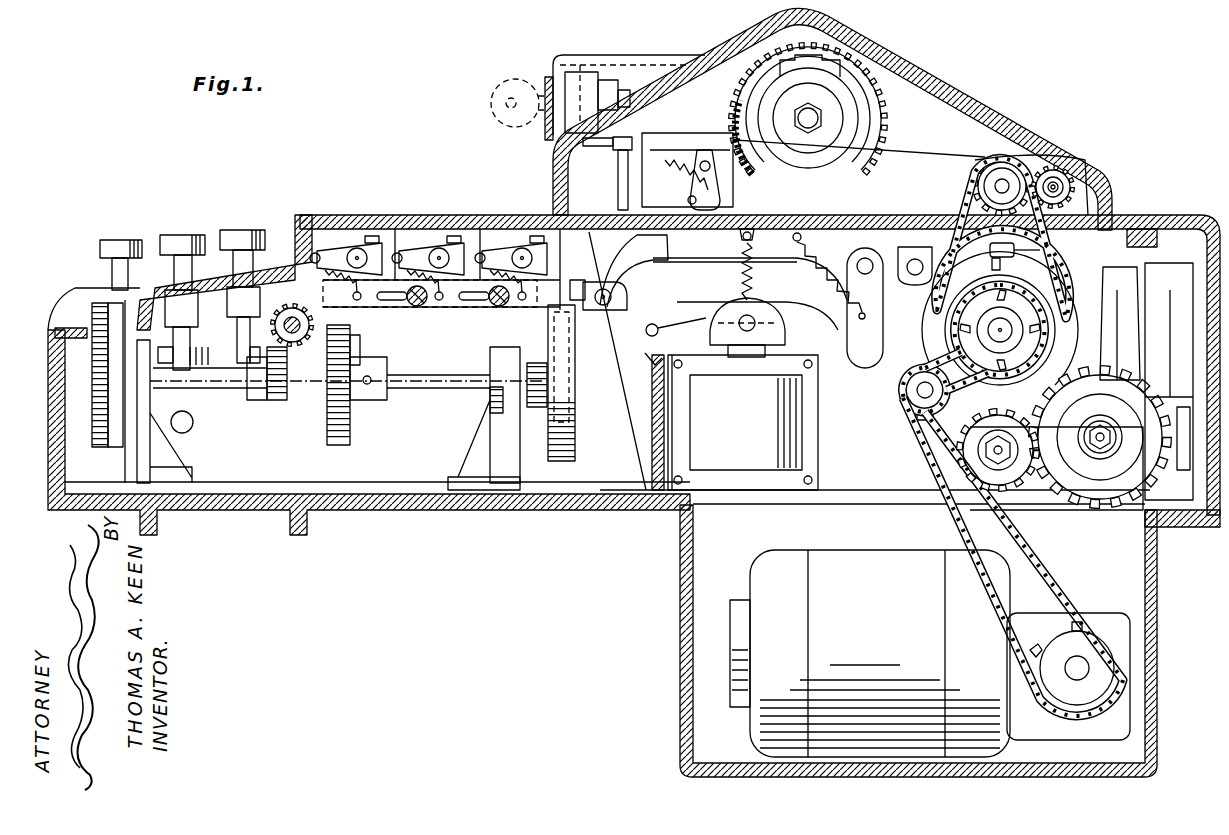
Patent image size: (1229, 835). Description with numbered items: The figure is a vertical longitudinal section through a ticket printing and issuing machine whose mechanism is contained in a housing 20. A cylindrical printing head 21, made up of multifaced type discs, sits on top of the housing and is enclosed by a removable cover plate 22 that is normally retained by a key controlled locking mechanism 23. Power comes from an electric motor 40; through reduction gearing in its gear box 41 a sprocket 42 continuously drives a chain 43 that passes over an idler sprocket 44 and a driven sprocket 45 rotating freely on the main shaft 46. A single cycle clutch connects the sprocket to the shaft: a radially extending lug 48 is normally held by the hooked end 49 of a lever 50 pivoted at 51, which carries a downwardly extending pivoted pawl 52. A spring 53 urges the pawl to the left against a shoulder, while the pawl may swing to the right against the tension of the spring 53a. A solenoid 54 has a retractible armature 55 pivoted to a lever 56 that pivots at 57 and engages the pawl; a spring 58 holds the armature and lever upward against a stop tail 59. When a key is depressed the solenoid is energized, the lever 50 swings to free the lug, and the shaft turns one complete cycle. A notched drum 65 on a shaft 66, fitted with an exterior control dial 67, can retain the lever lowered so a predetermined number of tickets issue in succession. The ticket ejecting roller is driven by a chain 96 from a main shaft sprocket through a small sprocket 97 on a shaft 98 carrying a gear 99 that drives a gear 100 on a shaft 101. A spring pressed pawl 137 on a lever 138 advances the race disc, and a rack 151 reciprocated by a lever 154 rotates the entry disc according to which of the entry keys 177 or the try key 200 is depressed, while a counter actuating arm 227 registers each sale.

The housing 20 is at (540, 508).
The printing head 21 is at (895, 104).
The cover plate 22 is at (1020, 112).
The key controlled locking mechanism 23 is at (545, 132).
The electric motor 40 is at (893, 628).
The gear box 41 is at (1116, 625).
The sprocket 42 is at (1095, 668).
The chain 43 is at (1030, 540).
The idler sprocket 44 is at (912, 392).
The driven sprocket 45 is at (996, 322).
The main shaft 46 is at (993, 343).
The lug 48 is at (992, 265).
The hooked end 49 is at (1040, 250).
The lever 50 is at (724, 253).
The pivot 51 is at (915, 275).
The pawl 52 is at (862, 358).
The spring 53 is at (885, 300).
The spring 53a is at (800, 300).
The solenoid 54 is at (752, 418).
The armature 55 is at (766, 351).
The lever 56 is at (818, 325).
The pivot 57 is at (646, 329).
The spring 58 is at (742, 274).
The stop tail 59 is at (652, 362).
The notched drum 65 is at (576, 360).
The shaft 66 is at (585, 284).
The control dial 67 is at (88, 298).
The chain 96 is at (1060, 276).
The small sprocket 97 is at (985, 183).
The shaft 98 is at (995, 190).
The gear 99 is at (978, 158).
The gear 100 is at (1065, 165).
The shaft 101 is at (1060, 188).
The pawl 137 is at (725, 172).
The lever 138 is at (705, 195).
The rack 151 is at (722, 140).
The lever 154 is at (613, 186).
The entry keys 177 is at (136, 243).
The try key 200 is at (192, 236).
The actuating arm 227 is at (318, 226).